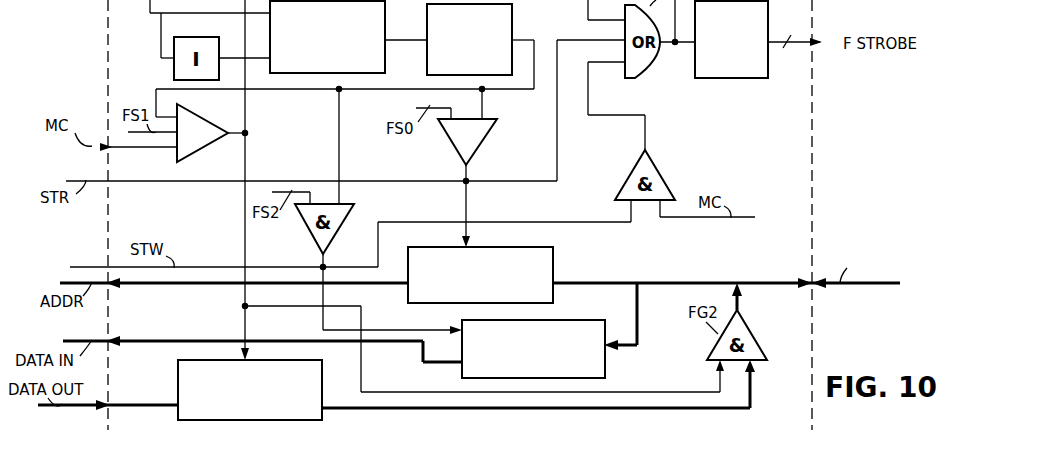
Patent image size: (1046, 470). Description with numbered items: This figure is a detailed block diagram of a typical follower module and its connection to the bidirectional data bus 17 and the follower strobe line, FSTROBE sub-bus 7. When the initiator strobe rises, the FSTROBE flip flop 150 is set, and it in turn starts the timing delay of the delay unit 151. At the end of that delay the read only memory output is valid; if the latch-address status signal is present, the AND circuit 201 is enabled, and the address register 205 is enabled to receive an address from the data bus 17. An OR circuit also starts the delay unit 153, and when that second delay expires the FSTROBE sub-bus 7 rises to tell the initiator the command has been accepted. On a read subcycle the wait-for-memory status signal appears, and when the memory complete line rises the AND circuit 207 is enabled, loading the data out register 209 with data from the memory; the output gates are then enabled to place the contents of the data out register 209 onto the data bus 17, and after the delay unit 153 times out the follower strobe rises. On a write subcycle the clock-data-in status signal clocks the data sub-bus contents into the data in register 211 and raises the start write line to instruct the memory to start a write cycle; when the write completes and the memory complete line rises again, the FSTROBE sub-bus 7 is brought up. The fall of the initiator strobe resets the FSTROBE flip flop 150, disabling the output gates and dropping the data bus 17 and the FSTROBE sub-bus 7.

The FSTROBE flip flop 150 is at (348, 36).
The delay unit 151 is at (513, 14).
The delay unit 153 is at (731, 80).
The AND circuit 201 is at (492, 134).
The address register 205 is at (551, 247).
The AND circuit 207 is at (220, 122).
The data out register 209 is at (178, 371).
The data in register 211 is at (566, 319).
The data bus 17 is at (878, 283).
The FSTROBE sub-bus 7 is at (785, 53).